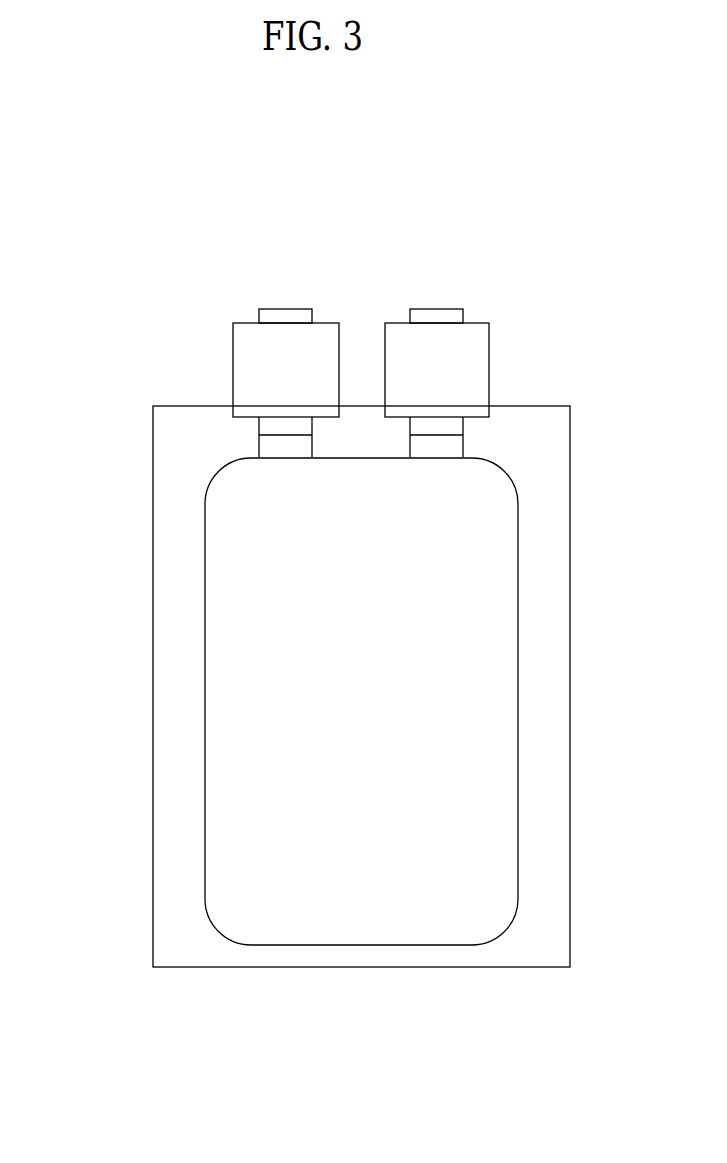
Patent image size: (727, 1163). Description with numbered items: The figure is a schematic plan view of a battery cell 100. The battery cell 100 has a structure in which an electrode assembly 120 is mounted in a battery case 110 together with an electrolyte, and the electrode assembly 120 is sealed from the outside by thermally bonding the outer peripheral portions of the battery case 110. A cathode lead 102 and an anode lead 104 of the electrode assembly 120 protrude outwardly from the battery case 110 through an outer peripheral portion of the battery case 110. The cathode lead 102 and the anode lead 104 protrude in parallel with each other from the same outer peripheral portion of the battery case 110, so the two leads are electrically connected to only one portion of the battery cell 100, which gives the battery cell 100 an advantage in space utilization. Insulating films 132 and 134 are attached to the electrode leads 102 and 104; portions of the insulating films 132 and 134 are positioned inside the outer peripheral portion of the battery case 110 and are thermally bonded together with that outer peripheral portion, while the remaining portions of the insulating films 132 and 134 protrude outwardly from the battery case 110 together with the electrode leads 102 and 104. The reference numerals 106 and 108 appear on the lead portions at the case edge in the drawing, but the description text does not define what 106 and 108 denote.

The battery cell 100 is at (94, 237).
The battery case 110 is at (178, 722).
The electrode assembly 120 is at (231, 632).
The insulating film 132 is at (250, 347).
The insulating film 134 is at (473, 347).
The cathode lead 102 is at (287, 315).
The anode lead 104 is at (432, 315).
The first electrode lead 106 is at (273, 448).
The second electrode lead 108 is at (450, 448).